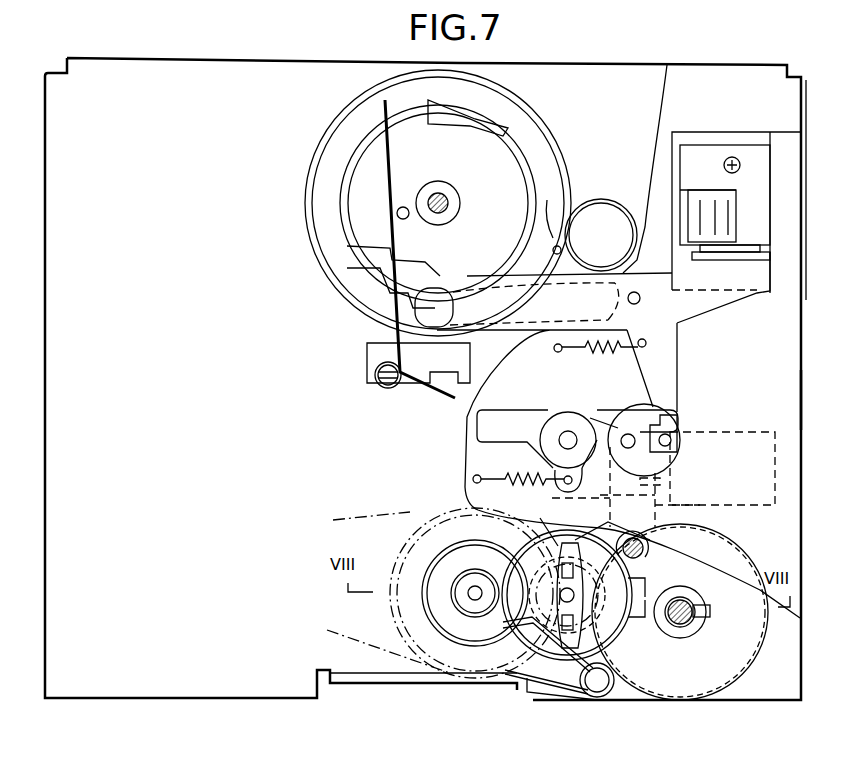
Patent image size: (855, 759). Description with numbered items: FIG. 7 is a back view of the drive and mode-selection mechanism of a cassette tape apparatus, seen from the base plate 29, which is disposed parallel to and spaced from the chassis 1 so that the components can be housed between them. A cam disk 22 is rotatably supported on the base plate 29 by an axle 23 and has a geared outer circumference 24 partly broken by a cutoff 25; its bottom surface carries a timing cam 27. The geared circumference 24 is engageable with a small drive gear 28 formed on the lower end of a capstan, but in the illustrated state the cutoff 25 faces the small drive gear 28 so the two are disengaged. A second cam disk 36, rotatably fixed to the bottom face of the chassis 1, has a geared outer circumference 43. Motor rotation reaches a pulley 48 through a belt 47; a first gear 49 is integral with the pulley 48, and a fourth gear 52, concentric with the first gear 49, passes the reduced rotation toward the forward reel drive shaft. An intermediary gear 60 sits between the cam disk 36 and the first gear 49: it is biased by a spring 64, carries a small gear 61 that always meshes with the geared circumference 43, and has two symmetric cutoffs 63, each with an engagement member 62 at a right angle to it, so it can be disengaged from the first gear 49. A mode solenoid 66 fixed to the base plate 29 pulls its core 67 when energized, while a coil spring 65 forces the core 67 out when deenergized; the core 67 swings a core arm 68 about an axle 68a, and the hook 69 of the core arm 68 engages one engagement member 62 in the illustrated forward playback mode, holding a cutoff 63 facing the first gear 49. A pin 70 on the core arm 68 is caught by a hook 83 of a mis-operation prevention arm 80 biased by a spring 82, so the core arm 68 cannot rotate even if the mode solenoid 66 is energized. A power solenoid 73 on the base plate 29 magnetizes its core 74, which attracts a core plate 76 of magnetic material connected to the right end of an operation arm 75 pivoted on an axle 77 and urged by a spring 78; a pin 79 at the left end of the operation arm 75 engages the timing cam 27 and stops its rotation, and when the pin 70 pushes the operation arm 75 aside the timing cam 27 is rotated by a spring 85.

The chassis 1 is at (292, 70).
The cam disk 22 is at (520, 108).
The axle 23 is at (449, 203).
The geared outer circumference 24 is at (568, 142).
The cutoff 25 is at (551, 214).
The timing cam 27 is at (330, 181).
The small drive gear 28 is at (600, 200).
The base plate 29 is at (790, 404).
The cam disk 36 is at (745, 648).
The geared outer circumference 43 is at (734, 690).
The belt 47 is at (392, 653).
The pulley 48 is at (417, 535).
The first gear 49 is at (470, 620).
The fourth gear 52 is at (418, 608).
The intermediary gear 60 is at (565, 680).
The small gear 61 is at (540, 590).
The engagement members 62 is at (565, 543).
The cutoffs 63 is at (503, 548).
The spring 64 is at (530, 693).
The coil spring 65 is at (660, 500).
The mode solenoid 66 is at (718, 432).
The core 67 is at (583, 480).
The core arm 68 is at (648, 550).
The axle 68a is at (643, 597).
The hook 69 is at (548, 540).
The pin 70 is at (600, 428).
The power solenoid 73 is at (727, 210).
The core 74 is at (693, 248).
The operation arm 75 is at (672, 338).
The core plate 76 is at (768, 254).
The axle 77 is at (628, 299).
The spring 78 is at (597, 352).
The pin 79 is at (440, 293).
The mis-operation prevention arm 80 is at (527, 418).
The spring 82 is at (528, 470).
The hook 83 is at (640, 425).
The spring 85 is at (387, 167).